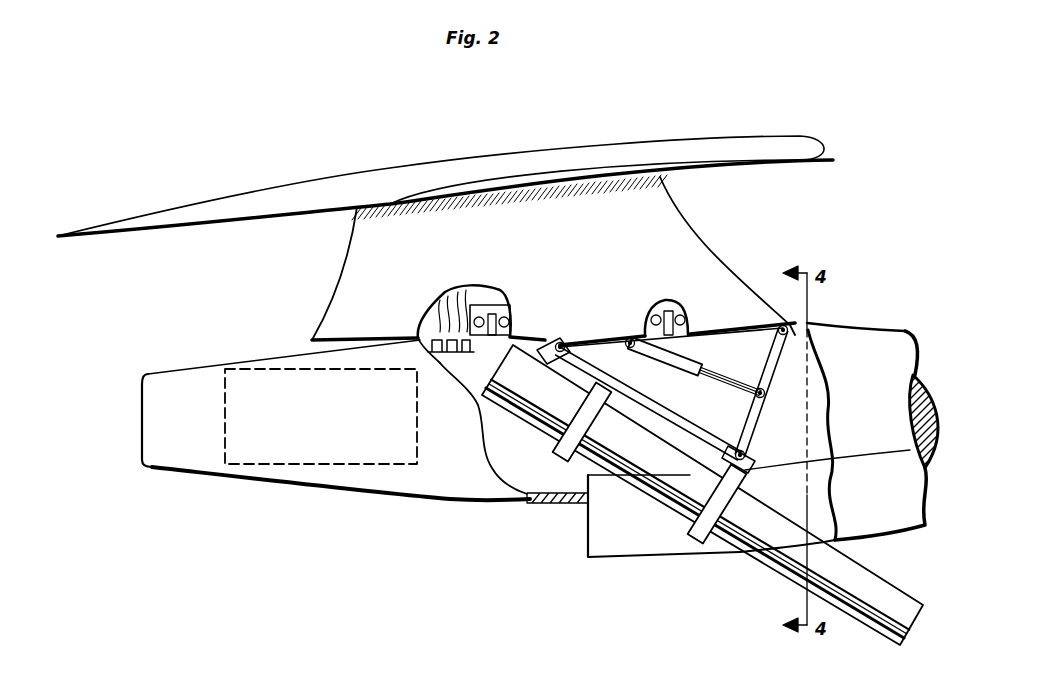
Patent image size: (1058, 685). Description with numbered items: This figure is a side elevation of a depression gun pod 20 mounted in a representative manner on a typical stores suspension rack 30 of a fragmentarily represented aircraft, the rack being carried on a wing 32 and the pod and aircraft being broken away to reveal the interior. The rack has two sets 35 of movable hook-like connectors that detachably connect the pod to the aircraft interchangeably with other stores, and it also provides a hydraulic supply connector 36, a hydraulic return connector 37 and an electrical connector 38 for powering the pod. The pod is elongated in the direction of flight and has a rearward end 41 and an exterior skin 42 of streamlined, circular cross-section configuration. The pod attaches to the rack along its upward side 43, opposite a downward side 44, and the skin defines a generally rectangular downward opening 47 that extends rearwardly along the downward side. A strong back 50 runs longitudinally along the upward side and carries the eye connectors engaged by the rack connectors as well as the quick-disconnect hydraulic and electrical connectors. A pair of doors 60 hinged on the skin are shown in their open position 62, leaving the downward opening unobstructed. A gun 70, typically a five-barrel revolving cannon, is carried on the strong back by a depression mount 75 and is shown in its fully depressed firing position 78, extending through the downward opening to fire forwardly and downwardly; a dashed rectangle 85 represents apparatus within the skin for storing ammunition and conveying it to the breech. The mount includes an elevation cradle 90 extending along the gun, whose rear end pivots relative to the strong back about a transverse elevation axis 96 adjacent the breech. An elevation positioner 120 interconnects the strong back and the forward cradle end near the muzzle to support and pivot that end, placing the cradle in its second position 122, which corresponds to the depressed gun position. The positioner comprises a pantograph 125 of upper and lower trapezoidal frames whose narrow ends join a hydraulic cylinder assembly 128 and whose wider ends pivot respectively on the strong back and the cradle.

The pod 20 is at (395, 549).
The stores suspension rack 30 is at (710, 243).
The wing 32 is at (764, 134).
The sets of movable hook-like connectors 35 is at (500, 310).
The hydraulic supply connector 36 is at (419, 331).
The hydraulic return connector 37 is at (448, 300).
The electrical connector 38 is at (468, 270).
The rearward end 41 is at (148, 373).
The exterior skin 42 is at (529, 504).
The upward side 43 is at (858, 331).
The downward side 44 is at (341, 492).
The downward opening 47 is at (614, 505).
The strong back 50 is at (726, 332).
The doors 60 is at (898, 530).
The open position 62 is at (700, 548).
The gun 70 is at (716, 497).
The depression mount 75 is at (716, 480).
The fully depressed firing position 78 is at (884, 630).
The ammunition storing and conveying apparatus 85 is at (228, 409).
The elevation cradle 90 is at (758, 455).
The elevation axis 96 is at (562, 343).
The elevation positioner 120 is at (712, 382).
The second position 122 is at (736, 396).
The pantograph 125 is at (770, 395).
The hydraulic cylinder assembly 128 is at (700, 348).